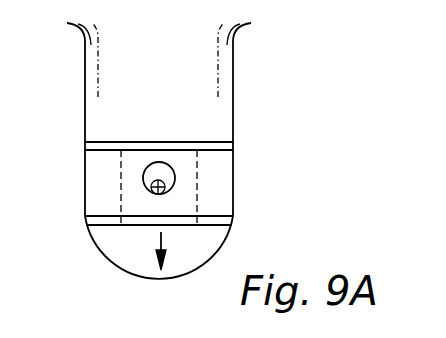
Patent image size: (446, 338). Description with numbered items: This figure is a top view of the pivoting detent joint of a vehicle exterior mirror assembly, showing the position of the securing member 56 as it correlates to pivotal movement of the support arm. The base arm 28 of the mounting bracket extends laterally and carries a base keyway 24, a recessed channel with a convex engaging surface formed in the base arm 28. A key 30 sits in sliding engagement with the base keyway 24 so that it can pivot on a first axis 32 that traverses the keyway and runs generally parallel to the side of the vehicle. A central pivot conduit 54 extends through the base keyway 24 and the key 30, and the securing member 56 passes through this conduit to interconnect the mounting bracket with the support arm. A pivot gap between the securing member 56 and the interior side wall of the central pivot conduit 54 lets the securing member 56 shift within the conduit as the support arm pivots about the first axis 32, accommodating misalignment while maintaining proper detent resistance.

The base arm 28 is at (233, 80).
The base keyway 24 is at (244, 141).
The key 30 is at (200, 171).
The central pivot conduit 54 is at (168, 172).
The securing member 56 is at (150, 186).
The first axis 32 is at (161, 241).